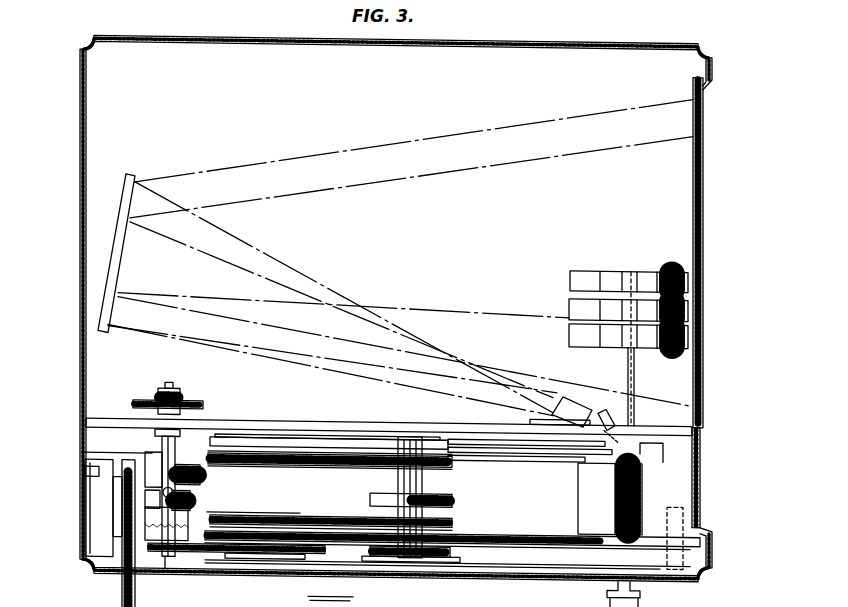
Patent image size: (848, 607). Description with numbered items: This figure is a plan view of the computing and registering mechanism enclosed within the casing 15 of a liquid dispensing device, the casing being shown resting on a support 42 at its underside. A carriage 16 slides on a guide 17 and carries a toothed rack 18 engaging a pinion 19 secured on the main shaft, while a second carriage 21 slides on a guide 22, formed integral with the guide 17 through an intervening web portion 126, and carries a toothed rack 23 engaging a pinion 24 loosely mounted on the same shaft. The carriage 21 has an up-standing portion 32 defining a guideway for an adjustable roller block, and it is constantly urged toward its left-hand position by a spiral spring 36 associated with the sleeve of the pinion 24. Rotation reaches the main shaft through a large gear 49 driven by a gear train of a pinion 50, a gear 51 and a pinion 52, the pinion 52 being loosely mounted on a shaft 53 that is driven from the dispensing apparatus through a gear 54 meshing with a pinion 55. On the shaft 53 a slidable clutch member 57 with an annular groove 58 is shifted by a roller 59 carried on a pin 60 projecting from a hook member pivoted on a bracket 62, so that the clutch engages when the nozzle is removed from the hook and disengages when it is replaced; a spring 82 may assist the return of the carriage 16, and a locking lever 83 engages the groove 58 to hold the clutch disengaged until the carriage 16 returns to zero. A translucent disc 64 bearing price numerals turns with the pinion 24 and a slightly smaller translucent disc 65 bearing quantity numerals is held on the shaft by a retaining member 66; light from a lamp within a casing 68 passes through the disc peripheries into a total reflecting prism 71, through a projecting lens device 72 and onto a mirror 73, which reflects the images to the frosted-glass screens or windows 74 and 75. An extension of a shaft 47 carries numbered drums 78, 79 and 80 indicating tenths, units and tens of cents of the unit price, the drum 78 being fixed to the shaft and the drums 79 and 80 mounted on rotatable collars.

The casing 15 is at (80, 241).
The carriage 16 is at (320, 497).
The guide 17 is at (527, 523).
The toothed rack 18 is at (355, 497).
The pinion 19 is at (447, 513).
The second carriage 21 is at (280, 466).
The guide 22 is at (478, 456).
The toothed rack 23 is at (308, 450).
The pinion 24 is at (380, 448).
The up-standing portion 32 is at (202, 476).
The spiral spring 36 is at (440, 489).
The support foot 42 is at (495, 554).
The shaft 47 is at (634, 375).
The large gear 49 is at (480, 536).
The pinion 50 is at (237, 553).
The gear 51 is at (287, 553).
The pinion 52 is at (202, 543).
The shaft 53 is at (180, 445).
The gear 54 is at (141, 398).
The pinion 55 is at (176, 393).
The slidable clutch member 57 is at (250, 512).
The annular groove 58 is at (167, 517).
The roller 59 is at (133, 527).
The pin 60 is at (132, 518).
The bracket 62 is at (105, 490).
The translucent disc 64 is at (268, 452).
The translucent disc 65 is at (245, 436).
The retaining member 66 is at (390, 436).
The casing 68 is at (640, 483).
The total reflecting prism 71 is at (612, 410).
The projecting lens device 72 is at (570, 402).
The mirror 73 is at (107, 301).
The screen or window 74 is at (705, 148).
The screen or window 75 is at (703, 366).
The numbered drum 78 is at (603, 256).
The numbered drum 79 is at (569, 294).
The numbered drum 80 is at (569, 323).
The spring 82 is at (405, 552).
The locking lever 83 is at (253, 503).
The web portion 126 is at (560, 504).